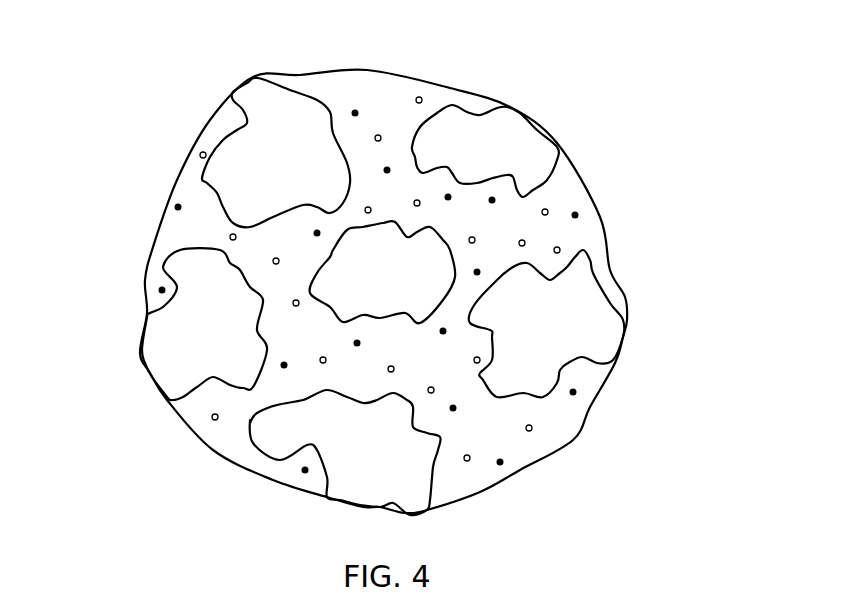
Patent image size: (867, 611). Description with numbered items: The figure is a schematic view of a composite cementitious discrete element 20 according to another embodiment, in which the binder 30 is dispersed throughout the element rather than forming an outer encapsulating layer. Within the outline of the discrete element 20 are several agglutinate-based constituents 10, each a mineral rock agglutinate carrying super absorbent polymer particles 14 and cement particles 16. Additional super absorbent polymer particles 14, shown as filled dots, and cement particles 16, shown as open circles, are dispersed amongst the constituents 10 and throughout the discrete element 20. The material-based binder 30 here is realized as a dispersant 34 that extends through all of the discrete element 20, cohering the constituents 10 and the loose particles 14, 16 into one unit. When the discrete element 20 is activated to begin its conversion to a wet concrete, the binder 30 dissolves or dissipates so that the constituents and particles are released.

The agglutinate-based constituent 10 is at (260, 87).
The super absorbent polymer particles 14 is at (355, 113).
The cement particles 16 is at (419, 103).
The composite cementitious discrete element 20 is at (130, 108).
The binder 30 is at (623, 297).
The dispersant 34 is at (450, 383).